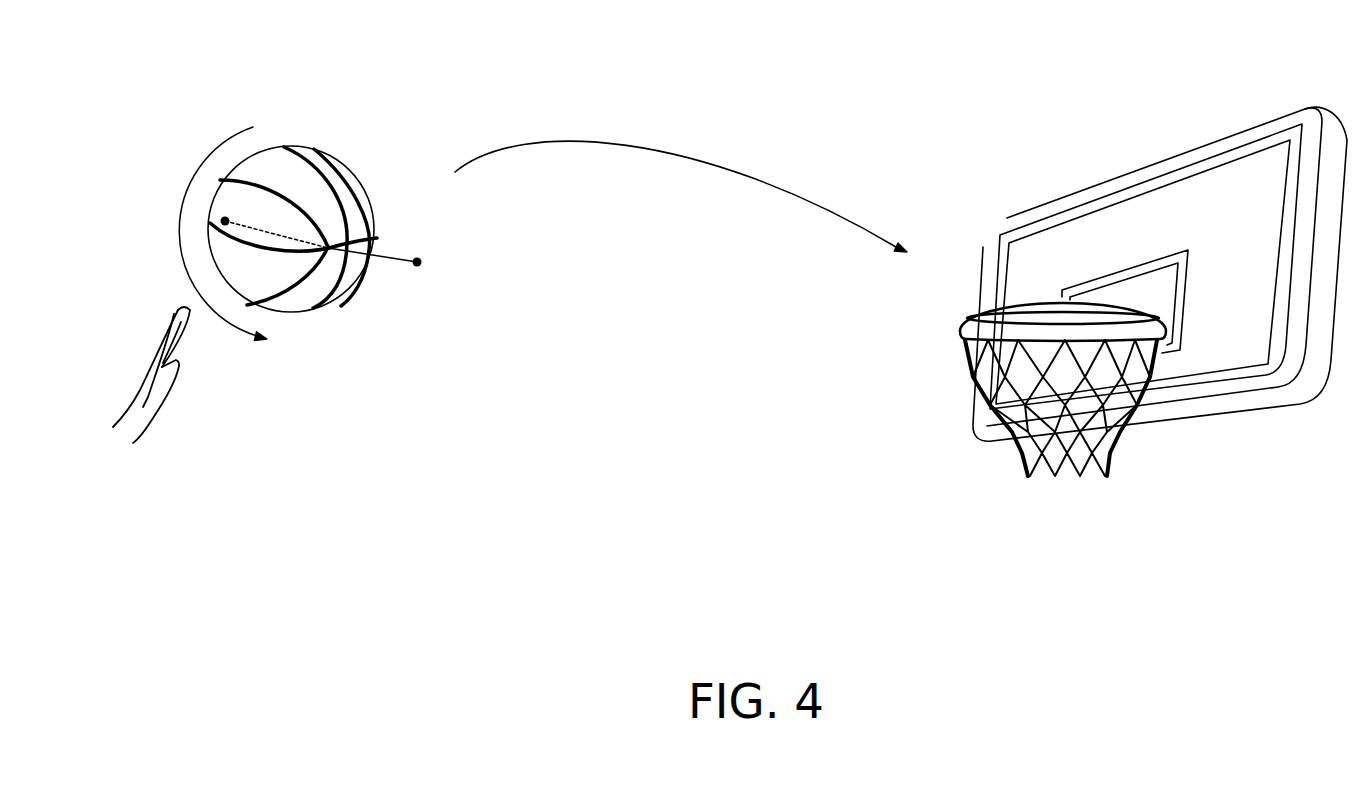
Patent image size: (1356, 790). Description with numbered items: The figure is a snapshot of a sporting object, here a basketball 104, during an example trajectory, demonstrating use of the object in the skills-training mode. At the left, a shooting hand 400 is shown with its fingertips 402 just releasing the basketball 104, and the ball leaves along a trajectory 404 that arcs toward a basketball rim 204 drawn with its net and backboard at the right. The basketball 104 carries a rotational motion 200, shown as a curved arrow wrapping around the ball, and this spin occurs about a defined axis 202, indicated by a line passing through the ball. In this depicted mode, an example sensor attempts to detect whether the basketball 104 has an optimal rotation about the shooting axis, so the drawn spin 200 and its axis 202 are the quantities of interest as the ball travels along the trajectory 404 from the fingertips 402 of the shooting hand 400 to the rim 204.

The basketball 104 is at (334, 138).
The rotational motion 200 is at (207, 135).
The defined axis 202 is at (389, 270).
The basketball rim 204 is at (1155, 348).
The shooting hand 400 is at (131, 332).
The fingertips 402 is at (168, 301).
The trajectory 404 is at (518, 131).